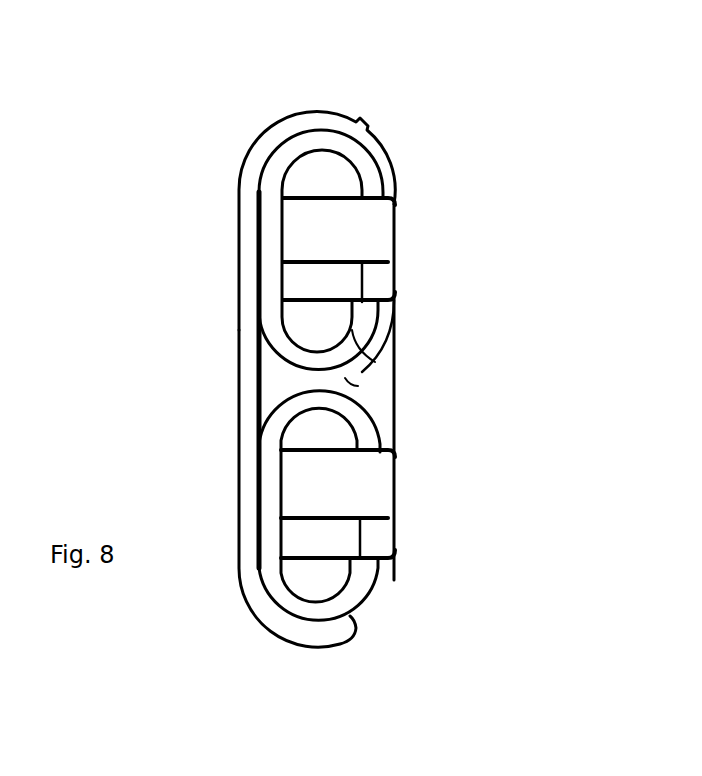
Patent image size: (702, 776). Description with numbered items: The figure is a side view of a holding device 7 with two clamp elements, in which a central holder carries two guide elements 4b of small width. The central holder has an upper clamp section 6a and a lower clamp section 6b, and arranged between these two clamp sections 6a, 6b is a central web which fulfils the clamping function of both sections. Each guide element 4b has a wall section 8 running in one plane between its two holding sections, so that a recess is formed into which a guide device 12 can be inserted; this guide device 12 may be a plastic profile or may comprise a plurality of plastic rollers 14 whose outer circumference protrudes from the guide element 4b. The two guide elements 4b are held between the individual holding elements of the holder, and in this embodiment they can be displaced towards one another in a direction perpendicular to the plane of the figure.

The holding device / clamp assembly 7 is at (232, 284).
The upper clamp section 6a is at (318, 118).
The lower clamp section 6b is at (335, 632).
The wall section 8 is at (272, 218).
The guide element 4b is at (380, 158).
The guide device 12 is at (330, 430).
The plastic rollers 14 is at (350, 495).